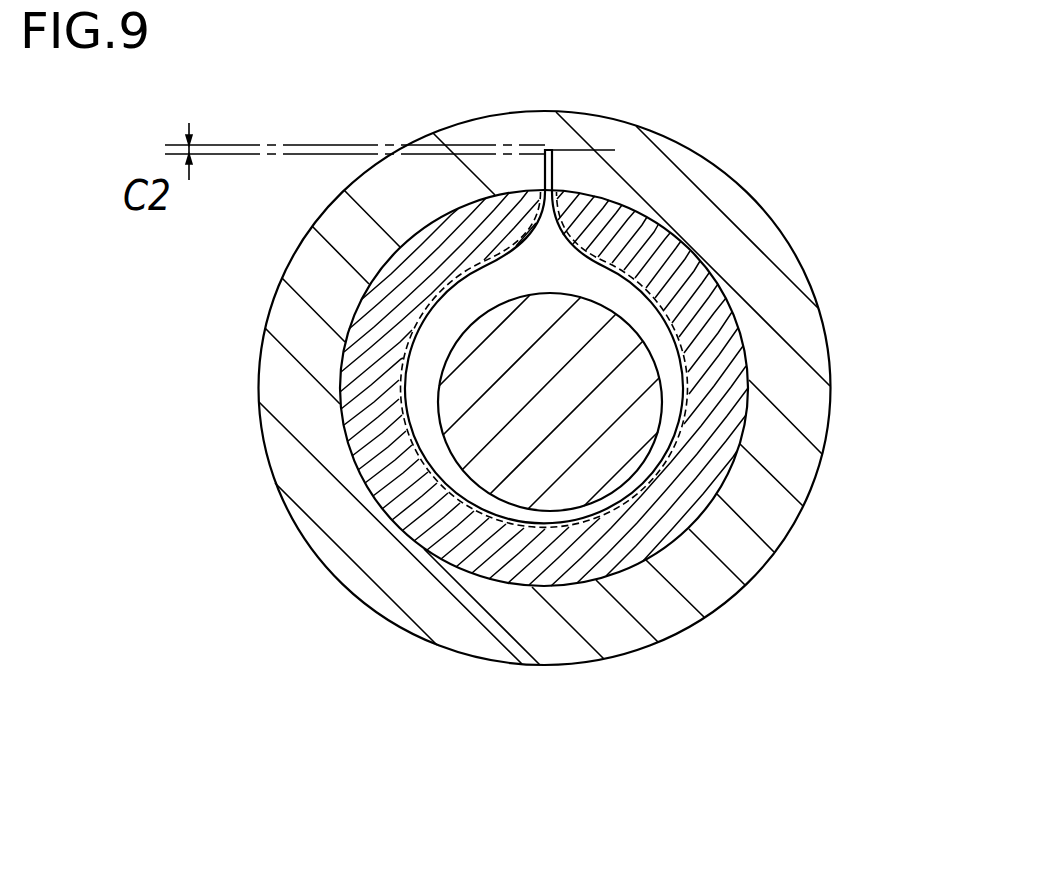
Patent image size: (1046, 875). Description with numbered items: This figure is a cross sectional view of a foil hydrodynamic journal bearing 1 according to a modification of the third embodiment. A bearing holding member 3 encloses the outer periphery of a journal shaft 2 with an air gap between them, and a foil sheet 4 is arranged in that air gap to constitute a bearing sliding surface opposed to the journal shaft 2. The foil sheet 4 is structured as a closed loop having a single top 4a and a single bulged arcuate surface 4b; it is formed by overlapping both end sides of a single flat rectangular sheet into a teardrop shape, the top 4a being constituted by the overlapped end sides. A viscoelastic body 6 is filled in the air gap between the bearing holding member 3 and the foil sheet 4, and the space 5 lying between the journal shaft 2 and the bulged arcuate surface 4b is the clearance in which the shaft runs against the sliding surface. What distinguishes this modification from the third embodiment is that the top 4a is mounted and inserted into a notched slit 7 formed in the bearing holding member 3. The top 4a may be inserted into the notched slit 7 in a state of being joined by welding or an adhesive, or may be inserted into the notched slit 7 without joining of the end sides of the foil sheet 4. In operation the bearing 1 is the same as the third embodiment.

The foil hydrodynamic journal bearing 1 is at (804, 204).
The journal shaft 2 is at (620, 393).
The bearing holding member 3 is at (797, 460).
The foil sheet 4 is at (667, 467).
The top 4a is at (615, 150).
The bulged arcuate surface 4b is at (560, 525).
The gap between core and inner tube 5 is at (606, 291).
The viscoelastic body 6 is at (716, 292).
The notched slit 7 is at (548, 150).